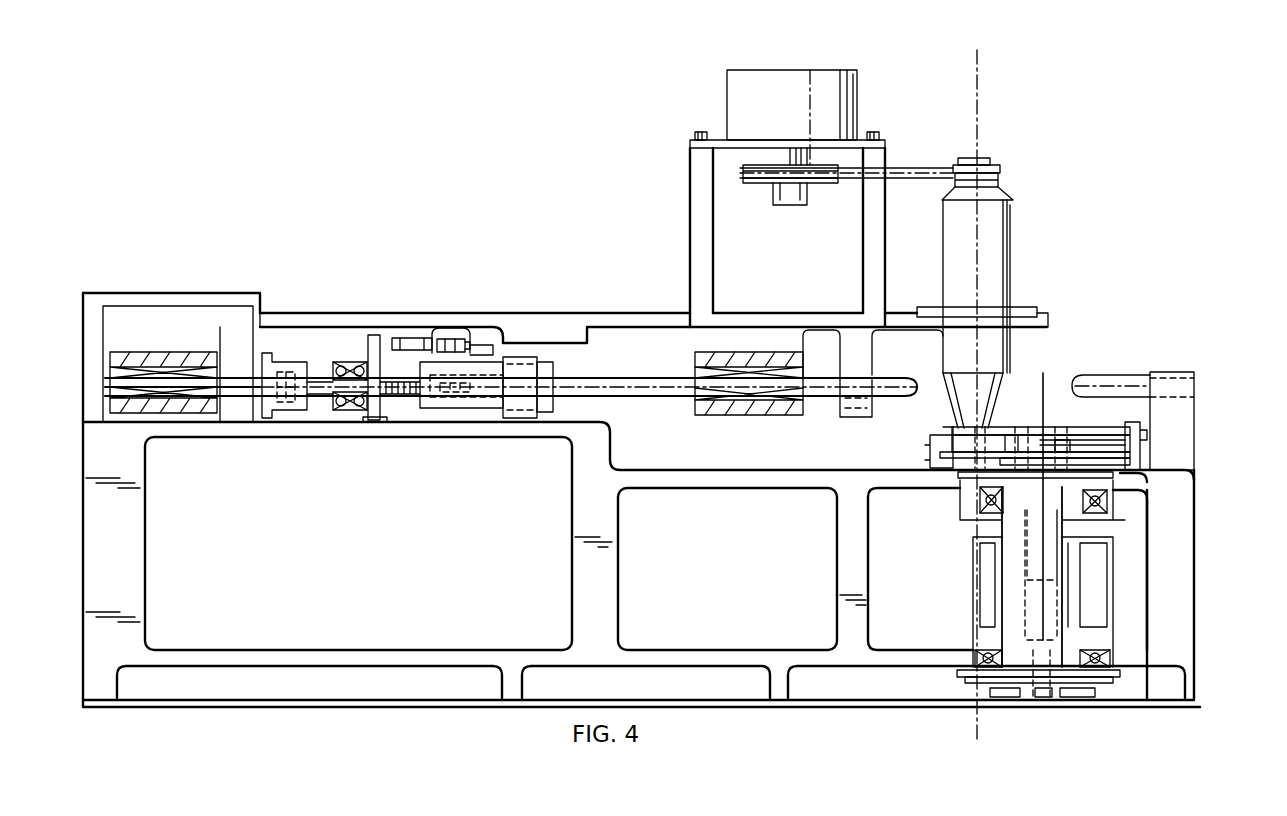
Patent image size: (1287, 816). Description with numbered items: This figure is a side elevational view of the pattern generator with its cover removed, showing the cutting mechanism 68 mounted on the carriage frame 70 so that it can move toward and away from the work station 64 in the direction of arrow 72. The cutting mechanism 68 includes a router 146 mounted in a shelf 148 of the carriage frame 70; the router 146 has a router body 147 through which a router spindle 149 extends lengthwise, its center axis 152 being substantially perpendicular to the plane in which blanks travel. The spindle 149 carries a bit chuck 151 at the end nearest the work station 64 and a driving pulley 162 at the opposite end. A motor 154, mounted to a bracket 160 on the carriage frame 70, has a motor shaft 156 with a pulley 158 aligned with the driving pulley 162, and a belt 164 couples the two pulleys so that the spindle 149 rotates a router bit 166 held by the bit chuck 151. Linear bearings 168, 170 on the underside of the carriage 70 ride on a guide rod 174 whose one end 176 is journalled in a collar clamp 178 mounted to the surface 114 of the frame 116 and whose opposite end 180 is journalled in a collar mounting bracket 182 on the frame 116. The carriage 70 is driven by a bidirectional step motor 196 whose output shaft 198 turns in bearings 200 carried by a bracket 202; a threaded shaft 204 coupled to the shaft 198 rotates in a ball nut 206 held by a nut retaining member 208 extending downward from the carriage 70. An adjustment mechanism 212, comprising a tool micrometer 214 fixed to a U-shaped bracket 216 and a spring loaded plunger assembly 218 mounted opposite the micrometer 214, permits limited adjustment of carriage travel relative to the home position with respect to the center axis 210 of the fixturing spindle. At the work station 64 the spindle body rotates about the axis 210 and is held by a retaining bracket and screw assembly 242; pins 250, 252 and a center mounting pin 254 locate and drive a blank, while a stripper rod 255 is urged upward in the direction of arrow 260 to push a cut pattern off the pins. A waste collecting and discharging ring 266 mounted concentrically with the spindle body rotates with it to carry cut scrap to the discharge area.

The work station 64 is at (1057, 392).
The cutting mechanism 68 is at (1060, 196).
The carriage frame 70 is at (607, 310).
The direction arrow 72 is at (1045, 247).
The frame surface 114 is at (1170, 470).
The frame 116 is at (1195, 496).
The router 146 is at (940, 213).
The router body 147 is at (995, 226).
The shelf 148 is at (1040, 315).
The router spindle 149 is at (985, 163).
The bit chuck 151 is at (974, 430).
The axis 152 is at (985, 63).
The motor 154 is at (836, 84).
The motor shaft 156 is at (790, 157).
The pulley 158 is at (758, 183).
The bracket 160 is at (700, 195).
The driving pulley 162 is at (1000, 172).
The belt 164 is at (912, 168).
The router bit 166 is at (948, 460).
The linear bearing 168 is at (770, 412).
The linear bearing 170 is at (180, 358).
The guide rod 174 is at (632, 398).
The guide rod end 176 is at (1132, 375).
The collar clamp 178 is at (1180, 372).
The guide rod opposite end 180 is at (110, 385).
The collar mounting bracket 182 is at (100, 333).
The step motor 196 is at (285, 364).
The output shaft 198 is at (327, 398).
The bearings 200 is at (358, 360).
The bracket 202 is at (360, 414).
The threaded shaft 204 is at (406, 397).
The ball nut 206 is at (448, 412).
The nut retaining member 208 is at (545, 350).
The axis 210 is at (1042, 380).
The adjustment mechanism 212 is at (431, 328).
The tool micrometer 214 is at (410, 338).
The U-shaped bracket 216 is at (456, 338).
The spring loaded plunger assembly 218 is at (460, 356).
The retaining bracket and screw assembly 242 is at (1046, 698).
The pin 250 is at (1014, 438).
The pin 252 is at (1078, 444).
The center mounting pin 254 is at (1052, 452).
The stripper rod 255 is at (1000, 510).
The direction arrow 260 is at (1065, 537).
The waste collecting and discharging ring 266 is at (975, 493).